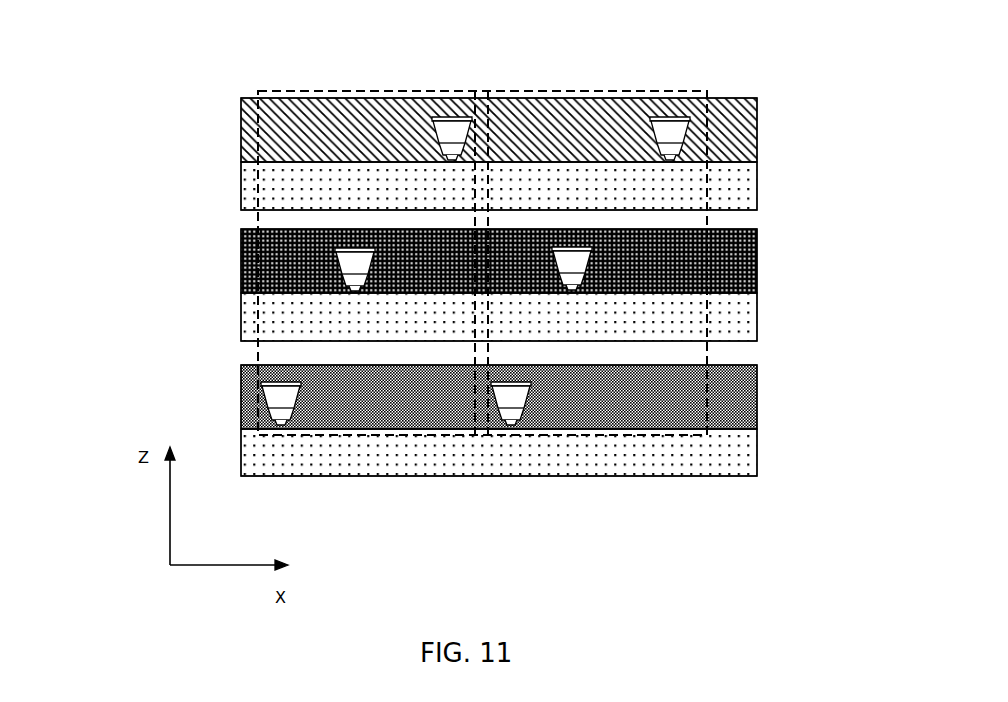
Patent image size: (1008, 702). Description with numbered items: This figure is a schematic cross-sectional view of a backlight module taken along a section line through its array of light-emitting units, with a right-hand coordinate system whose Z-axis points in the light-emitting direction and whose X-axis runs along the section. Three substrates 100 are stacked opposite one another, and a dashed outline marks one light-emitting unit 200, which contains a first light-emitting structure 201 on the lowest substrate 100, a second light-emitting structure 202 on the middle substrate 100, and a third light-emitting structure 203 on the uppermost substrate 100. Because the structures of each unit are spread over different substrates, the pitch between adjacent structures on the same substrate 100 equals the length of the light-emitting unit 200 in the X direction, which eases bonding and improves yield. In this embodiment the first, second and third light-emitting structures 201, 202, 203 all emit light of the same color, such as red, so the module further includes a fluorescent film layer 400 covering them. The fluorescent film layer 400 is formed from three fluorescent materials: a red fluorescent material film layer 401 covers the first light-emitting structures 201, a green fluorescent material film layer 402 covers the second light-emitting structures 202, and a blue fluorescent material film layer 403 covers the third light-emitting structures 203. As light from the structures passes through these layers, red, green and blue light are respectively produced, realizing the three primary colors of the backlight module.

The substrate 100 is at (876, 455).
The light-emitting unit 200 is at (705, 91).
The first light-emitting structure 201 is at (513, 426).
The second light-emitting structure 202 is at (575, 264).
The third light-emitting structure 203 is at (677, 150).
The fluorescent film layer 400 is at (381, 263).
The red fluorescent material film layer 401 is at (421, 397).
The green fluorescent material film layer 402 is at (241, 263).
The blue fluorescent material film layer 403 is at (241, 132).